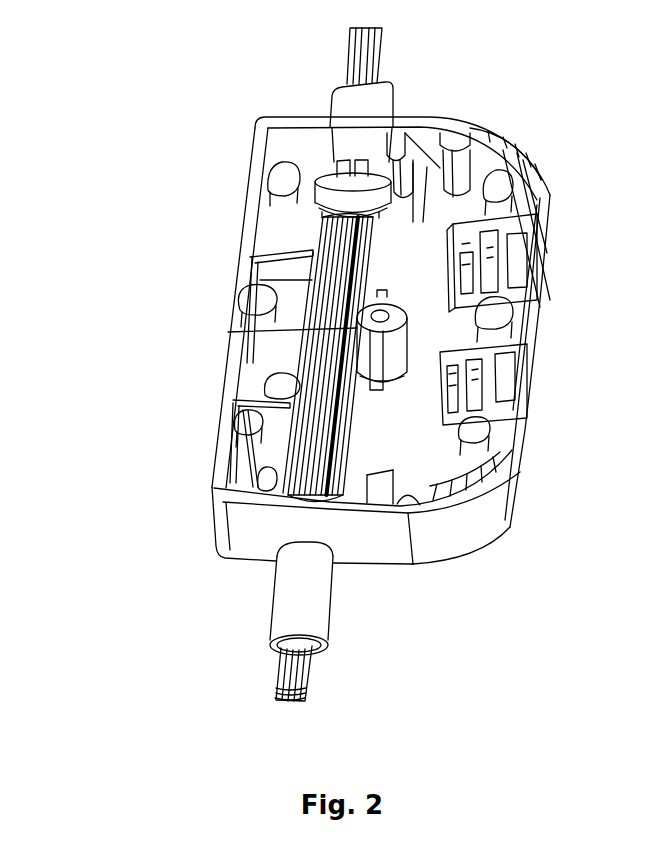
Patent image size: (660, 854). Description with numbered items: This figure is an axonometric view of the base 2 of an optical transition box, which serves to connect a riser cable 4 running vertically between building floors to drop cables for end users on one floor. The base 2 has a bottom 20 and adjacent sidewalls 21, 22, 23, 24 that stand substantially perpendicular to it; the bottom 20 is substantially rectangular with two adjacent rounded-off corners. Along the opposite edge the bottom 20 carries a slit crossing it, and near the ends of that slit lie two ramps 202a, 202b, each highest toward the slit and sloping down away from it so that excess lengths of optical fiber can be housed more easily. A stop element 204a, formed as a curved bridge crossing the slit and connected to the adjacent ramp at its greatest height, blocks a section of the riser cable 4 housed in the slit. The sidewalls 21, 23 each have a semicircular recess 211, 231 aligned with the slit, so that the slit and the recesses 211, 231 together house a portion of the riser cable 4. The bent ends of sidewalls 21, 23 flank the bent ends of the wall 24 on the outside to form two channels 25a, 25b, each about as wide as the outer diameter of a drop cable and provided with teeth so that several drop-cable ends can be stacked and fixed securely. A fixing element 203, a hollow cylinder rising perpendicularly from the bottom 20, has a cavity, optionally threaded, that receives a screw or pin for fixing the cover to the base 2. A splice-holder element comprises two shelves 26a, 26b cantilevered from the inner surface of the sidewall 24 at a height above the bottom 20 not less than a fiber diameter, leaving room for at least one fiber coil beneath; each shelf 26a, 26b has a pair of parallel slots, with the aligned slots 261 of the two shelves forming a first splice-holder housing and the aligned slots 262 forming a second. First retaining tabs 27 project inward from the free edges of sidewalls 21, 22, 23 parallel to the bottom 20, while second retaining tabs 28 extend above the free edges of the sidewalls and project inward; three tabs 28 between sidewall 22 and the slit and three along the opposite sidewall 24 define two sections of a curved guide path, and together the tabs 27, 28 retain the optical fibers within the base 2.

The base 2 is at (128, 321).
The riser cable 4 is at (271, 607).
The bottom 20 is at (400, 469).
The sidewall 21 is at (400, 128).
The recess 211 is at (394, 126).
The sidewall 22 is at (248, 172).
The sidewall 23 is at (220, 519).
The recess 231 is at (333, 556).
The sidewall 24 is at (537, 376).
The channel 25a is at (518, 152).
The channel 25b is at (486, 488).
The shelf 26a is at (400, 340).
The shelf 26b is at (441, 375).
The slot 261 is at (470, 237).
The slot 262 is at (512, 383).
The first retaining tab 27 is at (460, 134).
The second retaining tab 28 is at (274, 163).
The ramp 202a is at (377, 232).
The ramp 202b is at (345, 470).
The fixing element 203 is at (228, 332).
The stop element 204a is at (334, 165).